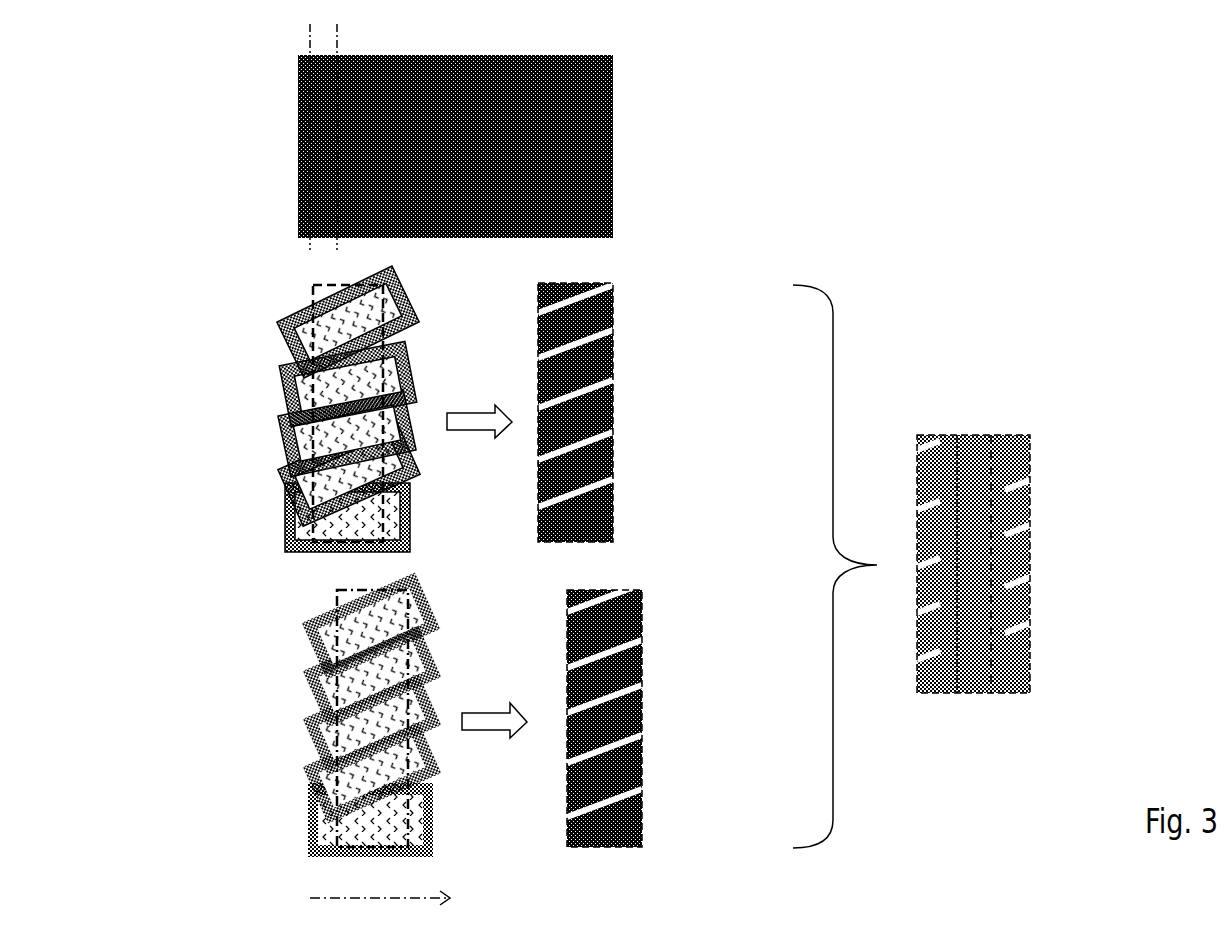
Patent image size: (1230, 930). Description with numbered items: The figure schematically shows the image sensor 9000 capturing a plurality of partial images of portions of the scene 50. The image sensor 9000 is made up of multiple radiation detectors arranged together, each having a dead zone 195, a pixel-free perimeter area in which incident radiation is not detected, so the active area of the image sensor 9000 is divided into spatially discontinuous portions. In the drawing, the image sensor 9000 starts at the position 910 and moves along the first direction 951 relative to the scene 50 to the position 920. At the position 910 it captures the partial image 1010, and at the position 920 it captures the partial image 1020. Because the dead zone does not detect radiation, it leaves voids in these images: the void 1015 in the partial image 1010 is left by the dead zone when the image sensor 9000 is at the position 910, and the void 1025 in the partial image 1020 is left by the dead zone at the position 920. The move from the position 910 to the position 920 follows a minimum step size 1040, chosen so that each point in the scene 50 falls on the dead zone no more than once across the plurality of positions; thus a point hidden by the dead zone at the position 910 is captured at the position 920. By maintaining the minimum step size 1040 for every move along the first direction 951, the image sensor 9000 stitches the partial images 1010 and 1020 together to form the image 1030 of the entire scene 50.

The scene 50 is at (635, 75).
The minimum step size 1040 is at (253, 36).
The image sensor 9000 is at (273, 333).
The dead zone 195 is at (410, 327).
The position 910 is at (343, 406).
The position 920 is at (319, 717).
The first direction 951 is at (380, 910).
The partial image 1010 is at (635, 388).
The void 1015 is at (610, 330).
The partial image 1020 is at (672, 700).
The void 1025 is at (640, 638).
The image 1030 is at (1017, 564).